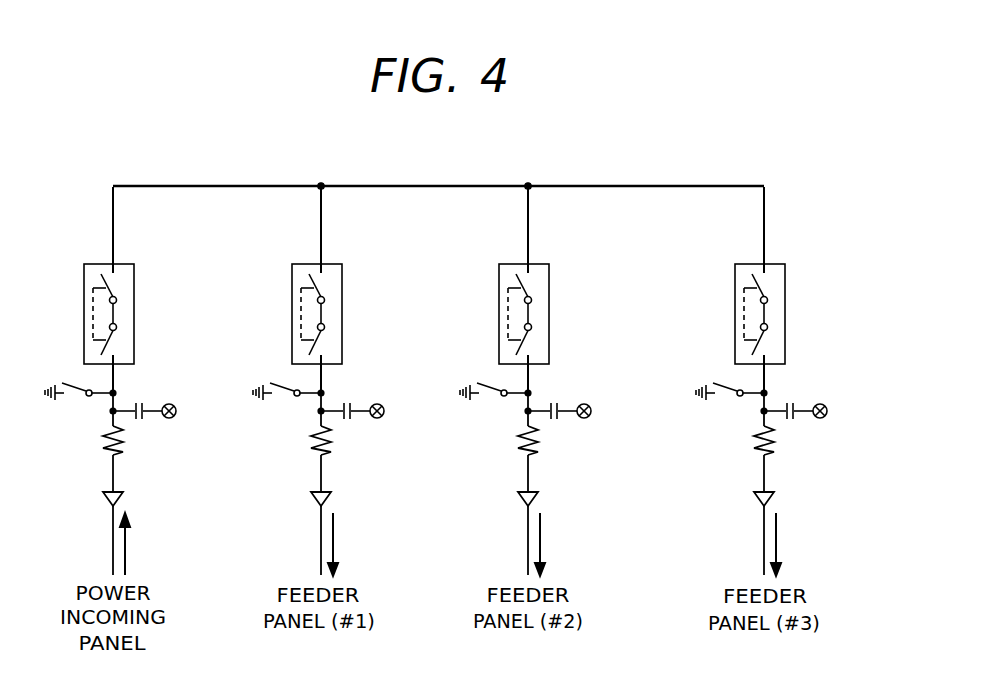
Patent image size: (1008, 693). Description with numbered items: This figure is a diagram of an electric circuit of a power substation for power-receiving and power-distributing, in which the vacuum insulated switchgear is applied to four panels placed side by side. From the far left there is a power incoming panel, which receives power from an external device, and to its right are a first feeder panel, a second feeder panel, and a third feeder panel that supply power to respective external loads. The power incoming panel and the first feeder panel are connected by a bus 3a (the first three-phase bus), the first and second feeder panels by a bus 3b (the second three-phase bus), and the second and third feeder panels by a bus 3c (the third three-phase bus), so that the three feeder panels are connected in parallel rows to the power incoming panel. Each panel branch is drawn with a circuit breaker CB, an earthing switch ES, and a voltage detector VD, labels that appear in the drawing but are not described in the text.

The bus 3a is at (216, 186).
The bus 3b is at (425, 186).
The bus 3c is at (647, 186).
The circuit breaker CB is at (416, 290).
The earthing switch ES is at (404, 406).
The voltage detector VD is at (468, 399).